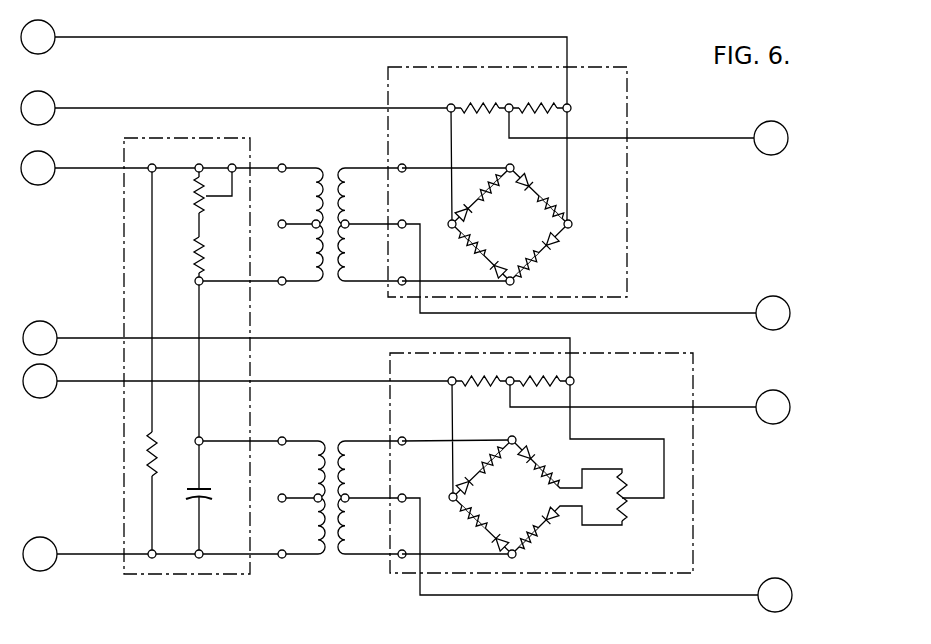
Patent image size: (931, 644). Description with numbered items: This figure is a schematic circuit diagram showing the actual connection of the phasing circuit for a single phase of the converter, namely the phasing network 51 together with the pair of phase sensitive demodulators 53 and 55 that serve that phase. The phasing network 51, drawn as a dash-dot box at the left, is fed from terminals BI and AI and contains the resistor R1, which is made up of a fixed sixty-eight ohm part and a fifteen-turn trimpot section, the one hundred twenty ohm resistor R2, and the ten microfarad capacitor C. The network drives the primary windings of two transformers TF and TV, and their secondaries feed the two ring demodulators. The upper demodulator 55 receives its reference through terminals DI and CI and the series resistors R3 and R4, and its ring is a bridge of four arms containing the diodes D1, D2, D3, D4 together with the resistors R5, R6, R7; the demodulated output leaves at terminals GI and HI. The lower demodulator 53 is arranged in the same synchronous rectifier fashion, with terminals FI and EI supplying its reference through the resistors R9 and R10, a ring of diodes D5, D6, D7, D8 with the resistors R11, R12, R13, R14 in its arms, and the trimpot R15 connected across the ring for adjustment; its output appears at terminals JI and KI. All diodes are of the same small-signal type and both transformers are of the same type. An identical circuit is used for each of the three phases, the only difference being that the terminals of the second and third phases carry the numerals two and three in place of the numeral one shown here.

The phasing network 51 is at (124, 243).
The phase sensitive demodulator 55 is at (628, 125).
The phase sensitive demodulator 53 is at (693, 370).
The resistor R1 is at (195, 212).
The resistor R2 is at (159, 436).
The capacitor C is at (213, 497).
The transformer TF is at (408, 152).
The transformer TV is at (408, 425).
The resistor R3 is at (468, 104).
The resistor R4 is at (533, 100).
The resistor R5 is at (490, 190).
The resistor R6 is at (484, 244).
The resistor R7 is at (536, 268).
The diode D1 is at (526, 174).
The diode D2 is at (472, 212).
The diode D3 is at (488, 268).
The diode D4 is at (560, 242).
The resistor R9 is at (466, 376).
The resistor R10 is at (550, 376).
The resistor R11 is at (496, 438).
The resistor R12 is at (476, 506).
The resistor R13 is at (534, 544).
The resistor R14 is at (550, 470).
The trimpot R15 is at (626, 510).
The diode D5 is at (530, 448).
The diode D6 is at (466, 478).
The diode D7 is at (492, 544).
The diode D8 is at (560, 524).
The terminal D1 DI is at (294, 122).
The terminal C1 CI is at (236, 108).
The terminal B1 BI is at (151, 168).
The terminal F1 FI is at (343, 409).
The terminal E1 EI is at (237, 381).
The terminal A1 AI is at (152, 554).
The terminal G1 GI is at (648, 131).
The terminal H1 HI is at (596, 277).
The terminal J1 JI is at (650, 402).
The terminal K1 KI is at (597, 555).